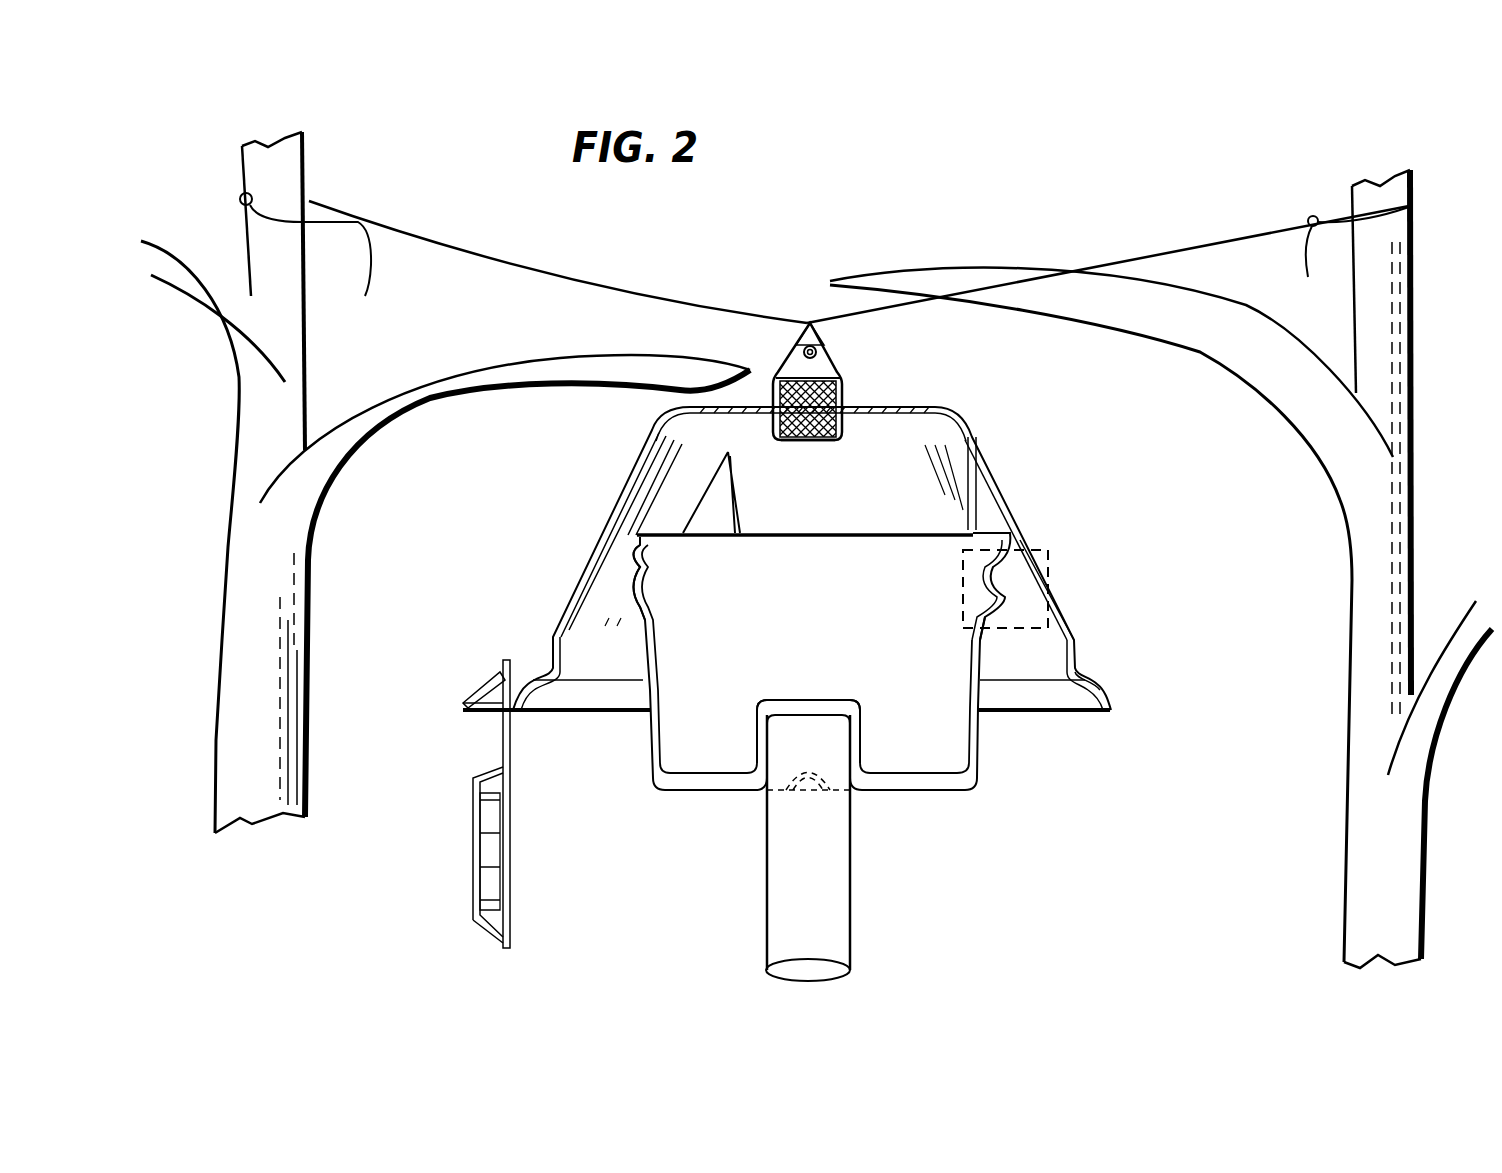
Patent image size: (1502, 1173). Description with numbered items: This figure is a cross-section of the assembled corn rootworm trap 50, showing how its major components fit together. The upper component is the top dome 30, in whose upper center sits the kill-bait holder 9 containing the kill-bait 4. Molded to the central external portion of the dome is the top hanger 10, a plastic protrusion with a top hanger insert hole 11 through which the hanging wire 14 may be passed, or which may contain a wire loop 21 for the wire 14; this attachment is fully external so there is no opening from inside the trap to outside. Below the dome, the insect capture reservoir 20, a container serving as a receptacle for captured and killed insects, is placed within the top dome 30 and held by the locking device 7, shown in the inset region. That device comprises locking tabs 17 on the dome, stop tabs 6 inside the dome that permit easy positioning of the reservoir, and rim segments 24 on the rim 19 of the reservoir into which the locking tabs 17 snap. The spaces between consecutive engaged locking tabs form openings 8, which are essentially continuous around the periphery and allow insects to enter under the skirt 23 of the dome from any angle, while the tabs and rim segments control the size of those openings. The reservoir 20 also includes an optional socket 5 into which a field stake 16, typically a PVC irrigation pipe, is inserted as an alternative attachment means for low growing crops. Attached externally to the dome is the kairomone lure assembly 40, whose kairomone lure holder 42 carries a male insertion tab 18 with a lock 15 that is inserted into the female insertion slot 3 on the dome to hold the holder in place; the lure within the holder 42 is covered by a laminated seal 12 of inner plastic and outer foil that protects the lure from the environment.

The female insertion slot 3 is at (500, 707).
The kill-bait 4 is at (812, 447).
The socket 5 is at (805, 707).
The stop tabs 6 is at (682, 530).
The locking device 7 is at (1033, 560).
The openings 8 is at (629, 530).
The kill-bait holder 9 is at (863, 384).
The top hanger 10 is at (822, 370).
The top hanger insert hole 11 is at (829, 352).
The seal 12 is at (493, 847).
The wire 14 is at (1169, 245).
The lock 15 is at (480, 693).
The field stake 16 is at (762, 874).
The locking tabs 17 is at (1028, 588).
The male insertion tab 18 is at (500, 670).
The rim 19 is at (637, 560).
The insect capture reservoir 20 is at (898, 663).
The wire loop 21 is at (812, 323).
The skirt 23 is at (1100, 691).
The rim segments 24 is at (1007, 588).
The top dome 30 is at (877, 579).
The kairomone lure assembly 40 is at (449, 862).
The kairomone lure holder 42 is at (477, 923).
The assembled trap 50 is at (1063, 593).